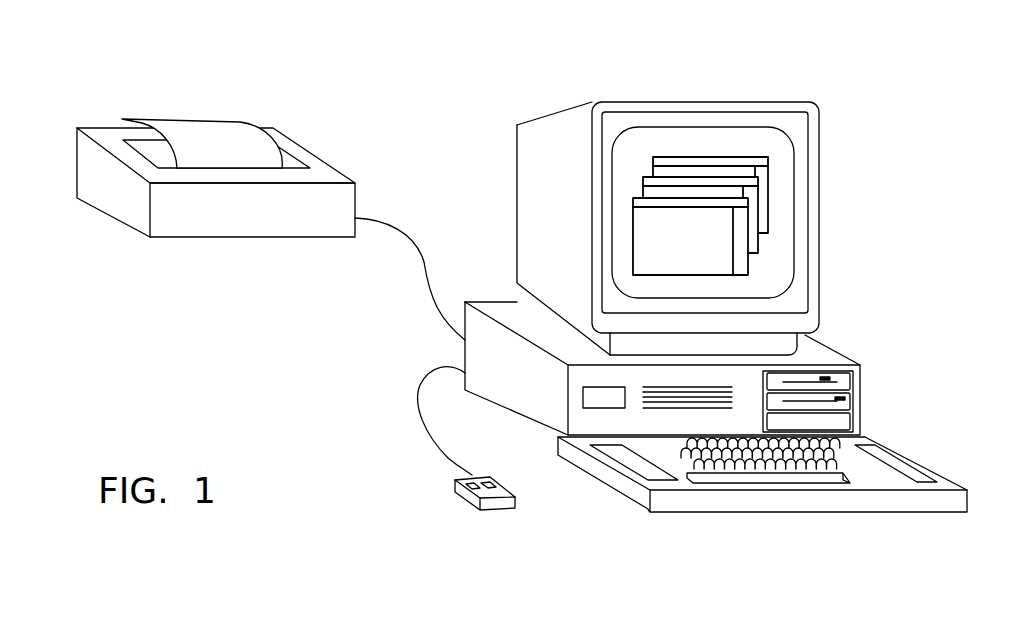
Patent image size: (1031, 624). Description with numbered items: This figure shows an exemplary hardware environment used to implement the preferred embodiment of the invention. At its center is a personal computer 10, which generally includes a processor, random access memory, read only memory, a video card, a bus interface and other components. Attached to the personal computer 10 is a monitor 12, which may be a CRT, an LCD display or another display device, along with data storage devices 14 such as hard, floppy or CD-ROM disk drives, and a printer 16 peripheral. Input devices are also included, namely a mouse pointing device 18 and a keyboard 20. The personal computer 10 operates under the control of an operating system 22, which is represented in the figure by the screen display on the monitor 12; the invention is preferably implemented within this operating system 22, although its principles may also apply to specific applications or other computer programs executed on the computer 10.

The personal computer 10 is at (730, 234).
The monitor 12 is at (729, 194).
The data storage devices 14 is at (835, 422).
The printer 16 is at (312, 148).
The mouse pointing device 18 is at (457, 490).
The keyboard 20 is at (925, 502).
The operating system 22 is at (775, 202).